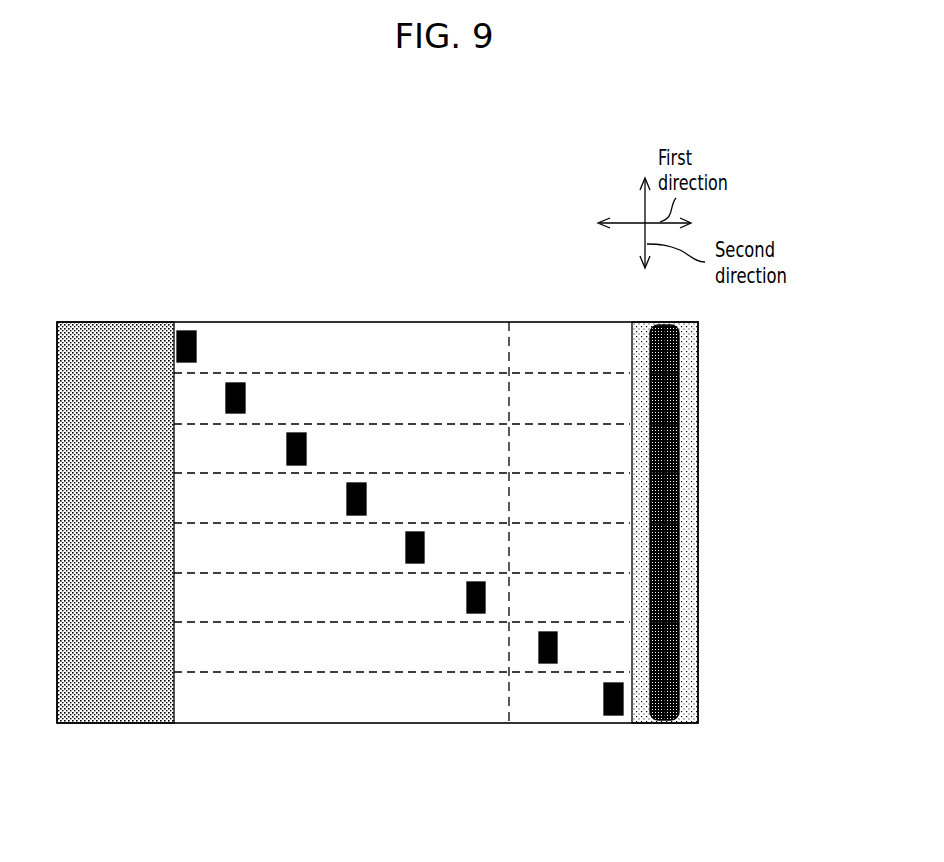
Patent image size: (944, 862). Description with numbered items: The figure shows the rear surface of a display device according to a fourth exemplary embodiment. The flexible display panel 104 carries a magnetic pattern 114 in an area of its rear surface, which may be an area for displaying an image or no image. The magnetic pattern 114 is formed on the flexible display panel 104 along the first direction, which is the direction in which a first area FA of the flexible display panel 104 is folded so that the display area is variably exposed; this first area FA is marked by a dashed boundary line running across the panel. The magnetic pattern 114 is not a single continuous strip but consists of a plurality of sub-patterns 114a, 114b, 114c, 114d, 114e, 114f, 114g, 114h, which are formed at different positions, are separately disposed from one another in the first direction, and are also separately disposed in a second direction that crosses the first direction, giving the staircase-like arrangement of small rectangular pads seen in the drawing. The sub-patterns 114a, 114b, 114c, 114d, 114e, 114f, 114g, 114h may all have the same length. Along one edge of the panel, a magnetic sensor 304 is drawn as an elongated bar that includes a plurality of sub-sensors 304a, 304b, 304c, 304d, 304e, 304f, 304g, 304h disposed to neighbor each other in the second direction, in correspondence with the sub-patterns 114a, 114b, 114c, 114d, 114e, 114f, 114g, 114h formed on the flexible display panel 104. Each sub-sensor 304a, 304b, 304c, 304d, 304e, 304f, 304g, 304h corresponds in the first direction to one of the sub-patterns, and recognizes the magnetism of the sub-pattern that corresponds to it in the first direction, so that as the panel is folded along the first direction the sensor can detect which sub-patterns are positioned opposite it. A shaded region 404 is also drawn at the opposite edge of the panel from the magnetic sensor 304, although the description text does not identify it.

The flexible display panel 104 is at (347, 340).
The first area FA is at (509, 343).
The driving circuit region 404 is at (113, 700).
The magnetic sensor 304 is at (783, 335).
The sub-sensor 304a is at (665, 695).
The sub-sensor 304b is at (665, 645).
The sub-sensor 304c is at (665, 595).
The sub-sensor 304d is at (665, 545).
The sub-sensor 304e is at (665, 495).
The sub-sensor 304f is at (665, 447).
The sub-sensor 304g is at (665, 397).
The sub-sensor 304h is at (665, 343).
The magnetic pattern 114 is at (205, 810).
The sub-pattern 114a is at (613, 715).
The sub-pattern 114b is at (548, 663).
The sub-pattern 114c is at (476, 613).
The sub-pattern 114d is at (415, 563).
The sub-pattern 114e is at (356, 515).
The sub-pattern 114f is at (296, 465).
The sub-pattern 114g is at (236, 413).
The sub-pattern 114h is at (187, 362).